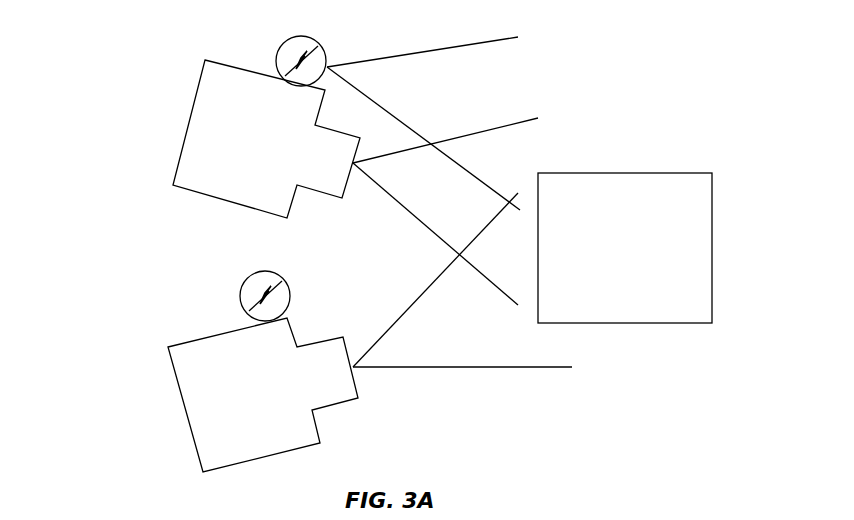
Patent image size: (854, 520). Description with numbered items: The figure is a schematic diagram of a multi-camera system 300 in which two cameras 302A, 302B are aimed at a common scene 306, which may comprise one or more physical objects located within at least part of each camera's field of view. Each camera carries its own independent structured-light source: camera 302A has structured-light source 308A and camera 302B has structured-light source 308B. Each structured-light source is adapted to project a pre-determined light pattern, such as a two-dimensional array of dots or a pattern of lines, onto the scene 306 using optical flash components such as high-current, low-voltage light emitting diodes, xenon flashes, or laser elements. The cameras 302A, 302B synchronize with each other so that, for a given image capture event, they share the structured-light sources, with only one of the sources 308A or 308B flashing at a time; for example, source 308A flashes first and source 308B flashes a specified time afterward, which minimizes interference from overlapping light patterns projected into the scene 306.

The multi-camera system 300 is at (140, 143).
The camera 302A is at (266, 139).
The camera 302B is at (263, 395).
The scene 306 is at (625, 248).
The structured-light source 308A is at (331, 49).
The structured-light source 308B is at (299, 271).